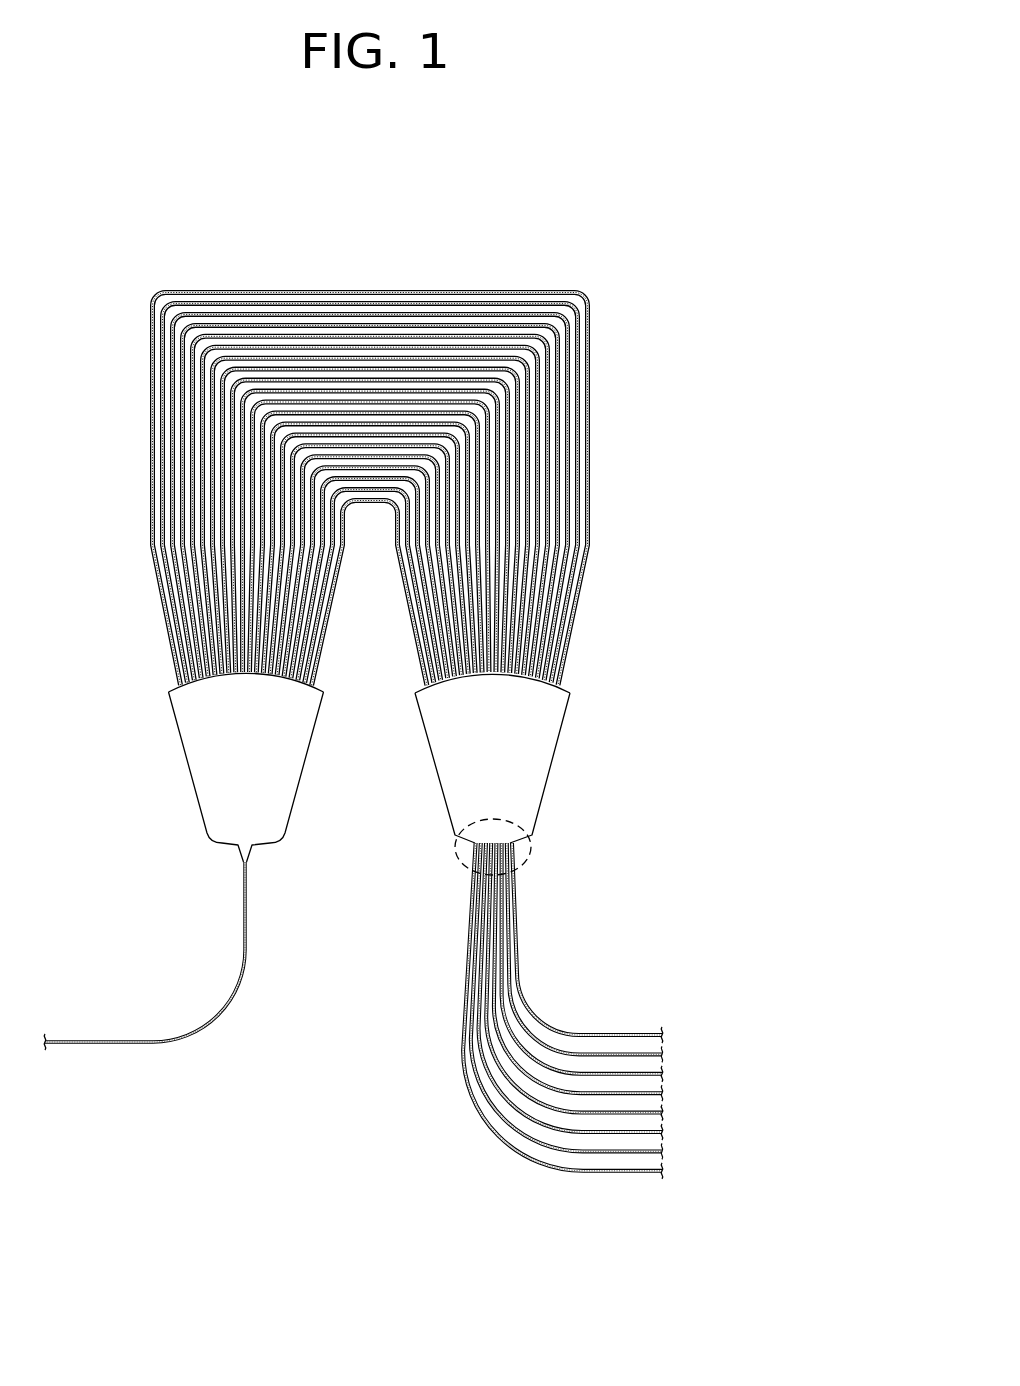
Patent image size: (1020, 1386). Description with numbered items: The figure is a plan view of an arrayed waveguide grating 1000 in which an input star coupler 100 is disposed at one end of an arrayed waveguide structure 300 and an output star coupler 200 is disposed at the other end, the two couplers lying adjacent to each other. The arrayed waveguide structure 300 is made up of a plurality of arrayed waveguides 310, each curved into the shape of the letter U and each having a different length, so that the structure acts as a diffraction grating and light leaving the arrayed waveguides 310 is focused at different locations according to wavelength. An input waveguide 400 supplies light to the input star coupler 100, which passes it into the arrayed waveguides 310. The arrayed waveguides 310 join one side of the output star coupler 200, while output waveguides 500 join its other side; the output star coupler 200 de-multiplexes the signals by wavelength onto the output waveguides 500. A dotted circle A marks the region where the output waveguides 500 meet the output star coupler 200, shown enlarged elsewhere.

The arrayed waveguide grating 1000 is at (513, 176).
The arrayed waveguide structure 300 is at (415, 452).
The arrayed waveguide 310 is at (592, 448).
The input star coupler 100 is at (200, 766).
The output star coupler 200 is at (538, 766).
The input waveguide 400 is at (243, 936).
The output waveguides 500 is at (517, 927).
The dotted circle A is at (531, 847).